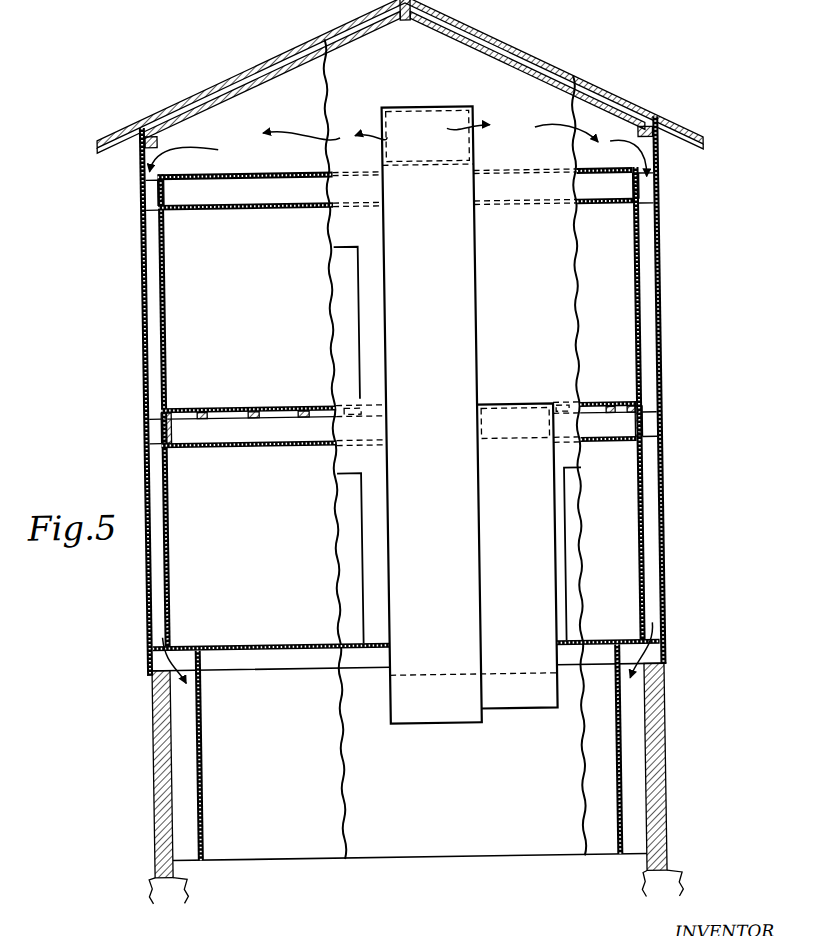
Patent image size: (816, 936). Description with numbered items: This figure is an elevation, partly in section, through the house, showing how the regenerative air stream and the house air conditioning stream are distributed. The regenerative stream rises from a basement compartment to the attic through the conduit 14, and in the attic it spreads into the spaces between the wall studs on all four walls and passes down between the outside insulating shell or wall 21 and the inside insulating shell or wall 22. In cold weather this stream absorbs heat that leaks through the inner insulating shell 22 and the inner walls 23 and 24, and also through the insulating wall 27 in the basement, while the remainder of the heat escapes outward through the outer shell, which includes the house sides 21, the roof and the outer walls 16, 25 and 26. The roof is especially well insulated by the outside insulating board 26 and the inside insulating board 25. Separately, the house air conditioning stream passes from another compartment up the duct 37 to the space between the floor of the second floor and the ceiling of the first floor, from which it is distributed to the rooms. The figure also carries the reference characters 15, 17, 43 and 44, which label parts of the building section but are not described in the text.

The conduit 14 is at (430, 107).
The attic space 15 is at (299, 86).
The outer wall 16 is at (144, 240).
The foundation wall 17 is at (175, 716).
The outside insulating shell or wall 21 is at (144, 175).
The inside insulating shell or wall 22 is at (167, 195).
The inner wall 23 is at (235, 207).
The inner wall 24 is at (252, 173).
The inside insulating board 25 is at (238, 96).
The outside insulating board 26 is at (246, 87).
The insulating wall 27 is at (198, 752).
The duct 37 is at (517, 555).
The intermediate floor upper layer 43 is at (233, 404).
The intermediate floor lower layer 44 is at (213, 437).